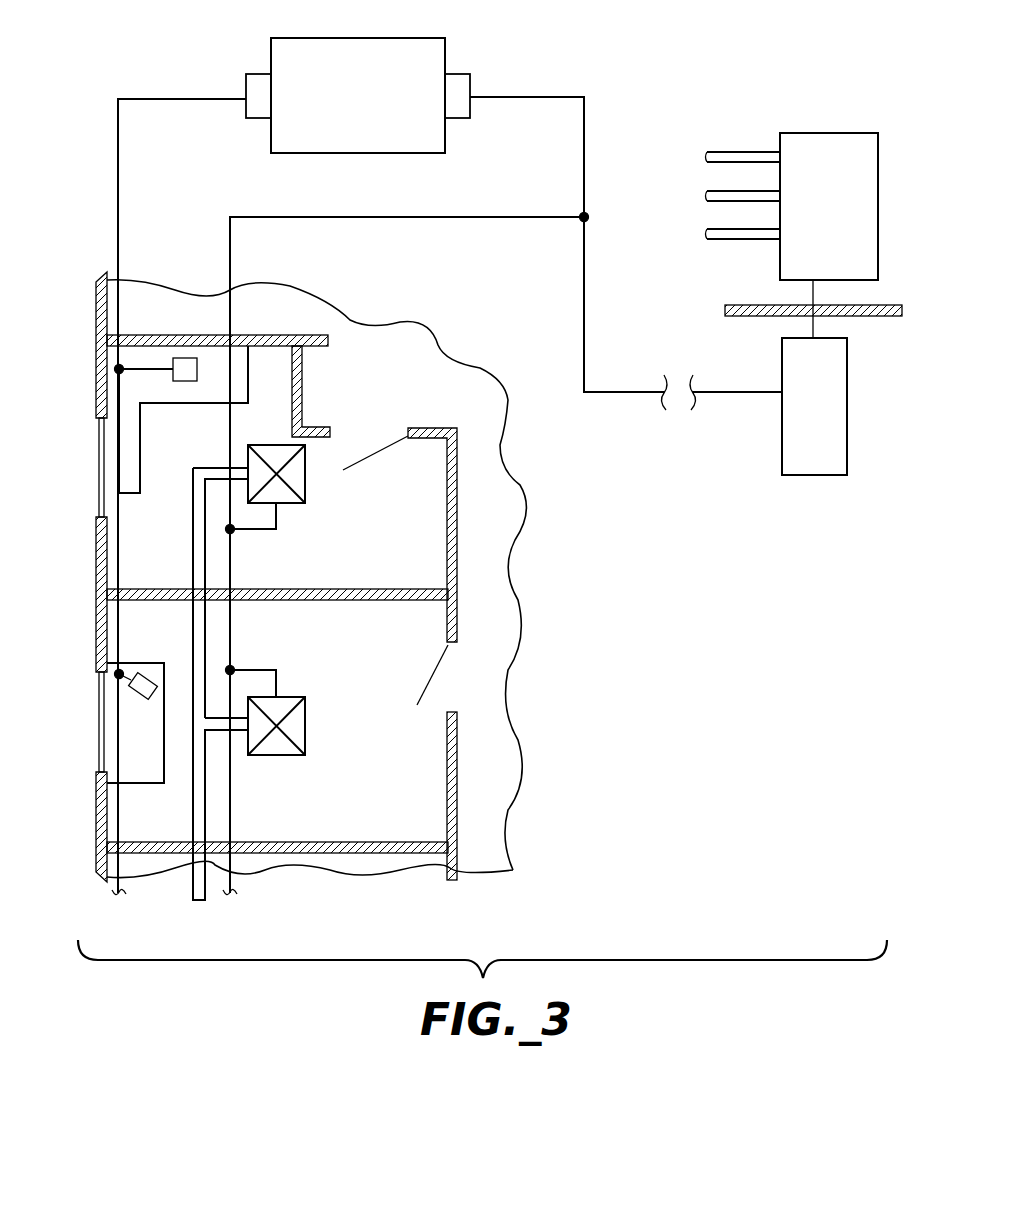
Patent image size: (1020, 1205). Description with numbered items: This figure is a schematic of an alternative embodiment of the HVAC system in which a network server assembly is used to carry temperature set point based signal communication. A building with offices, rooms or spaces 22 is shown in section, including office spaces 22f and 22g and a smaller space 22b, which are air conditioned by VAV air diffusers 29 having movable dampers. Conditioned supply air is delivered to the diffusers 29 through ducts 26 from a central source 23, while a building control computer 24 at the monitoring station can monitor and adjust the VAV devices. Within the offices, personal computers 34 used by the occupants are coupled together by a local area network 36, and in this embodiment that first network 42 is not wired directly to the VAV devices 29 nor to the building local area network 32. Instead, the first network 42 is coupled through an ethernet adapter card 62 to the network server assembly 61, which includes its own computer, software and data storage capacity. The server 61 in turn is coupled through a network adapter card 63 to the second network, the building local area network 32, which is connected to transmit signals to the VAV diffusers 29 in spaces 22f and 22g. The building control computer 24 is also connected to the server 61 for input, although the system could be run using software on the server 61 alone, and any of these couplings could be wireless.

The offices, rooms or spaces 22 is at (128, 568).
The office space 22f is at (402, 566).
The office space 22g is at (400, 794).
The space 22b is at (355, 832).
The central source 23 is at (819, 120).
The building control computer 24 is at (802, 491).
The ducts 26 is at (751, 229).
The VAV air diffusers 29 is at (305, 470).
The building local area network 32 is at (584, 278).
The personal computers 34 is at (175, 358).
The local area network 36 is at (143, 369).
The first network 42 is at (170, 97).
The network server assembly 61 is at (393, 38).
The ethernet adapter card 62 is at (262, 72).
The network adapter card 63 is at (455, 72).